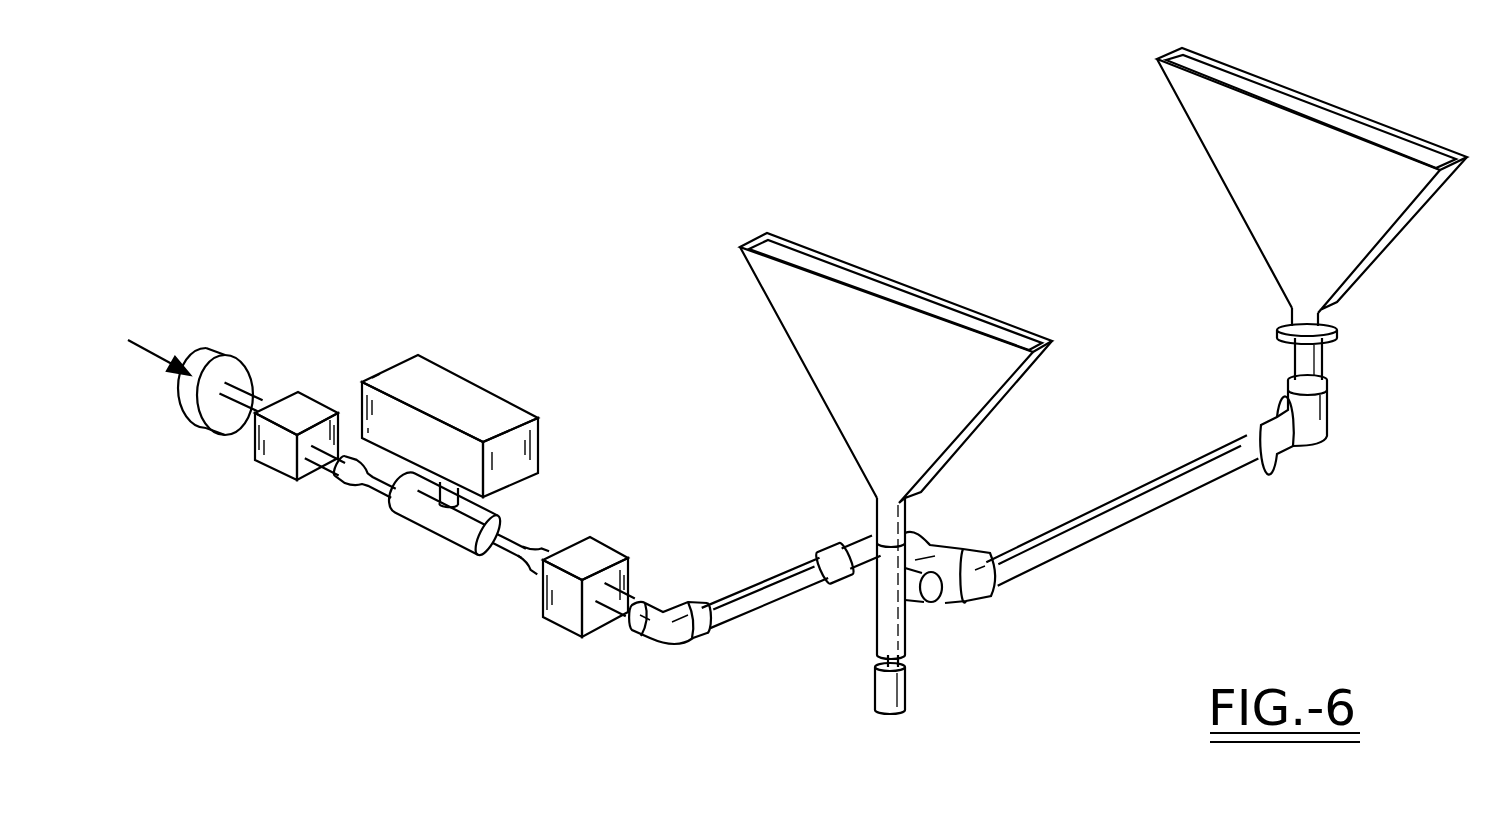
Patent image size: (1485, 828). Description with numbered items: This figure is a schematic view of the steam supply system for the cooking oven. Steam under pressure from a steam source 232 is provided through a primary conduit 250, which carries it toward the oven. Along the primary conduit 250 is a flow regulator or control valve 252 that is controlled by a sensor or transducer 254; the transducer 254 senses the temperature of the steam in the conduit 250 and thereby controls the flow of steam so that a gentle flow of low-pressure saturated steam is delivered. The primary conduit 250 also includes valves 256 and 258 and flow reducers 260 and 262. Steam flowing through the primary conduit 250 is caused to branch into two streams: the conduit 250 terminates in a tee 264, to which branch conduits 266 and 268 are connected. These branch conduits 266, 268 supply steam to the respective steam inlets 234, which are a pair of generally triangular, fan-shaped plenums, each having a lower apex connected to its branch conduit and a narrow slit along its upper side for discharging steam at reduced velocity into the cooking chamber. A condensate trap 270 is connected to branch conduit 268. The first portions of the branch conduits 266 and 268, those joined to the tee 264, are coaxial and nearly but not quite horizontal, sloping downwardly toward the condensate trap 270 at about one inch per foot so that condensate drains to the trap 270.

The steam source 232 is at (148, 352).
The steam inlets 234 is at (893, 282).
The primary conduit 250 is at (770, 602).
The flow regulator 252 is at (432, 532).
The transducer 254 is at (482, 395).
The valve 256 is at (273, 460).
The valve 258 is at (617, 557).
The flow reducer 260 is at (350, 477).
The flow reducer 262 is at (540, 553).
The tee 264 is at (973, 585).
The branch conduit 266 is at (923, 603).
The branch conduit 268 is at (1137, 513).
The condensate trap 270 is at (870, 703).